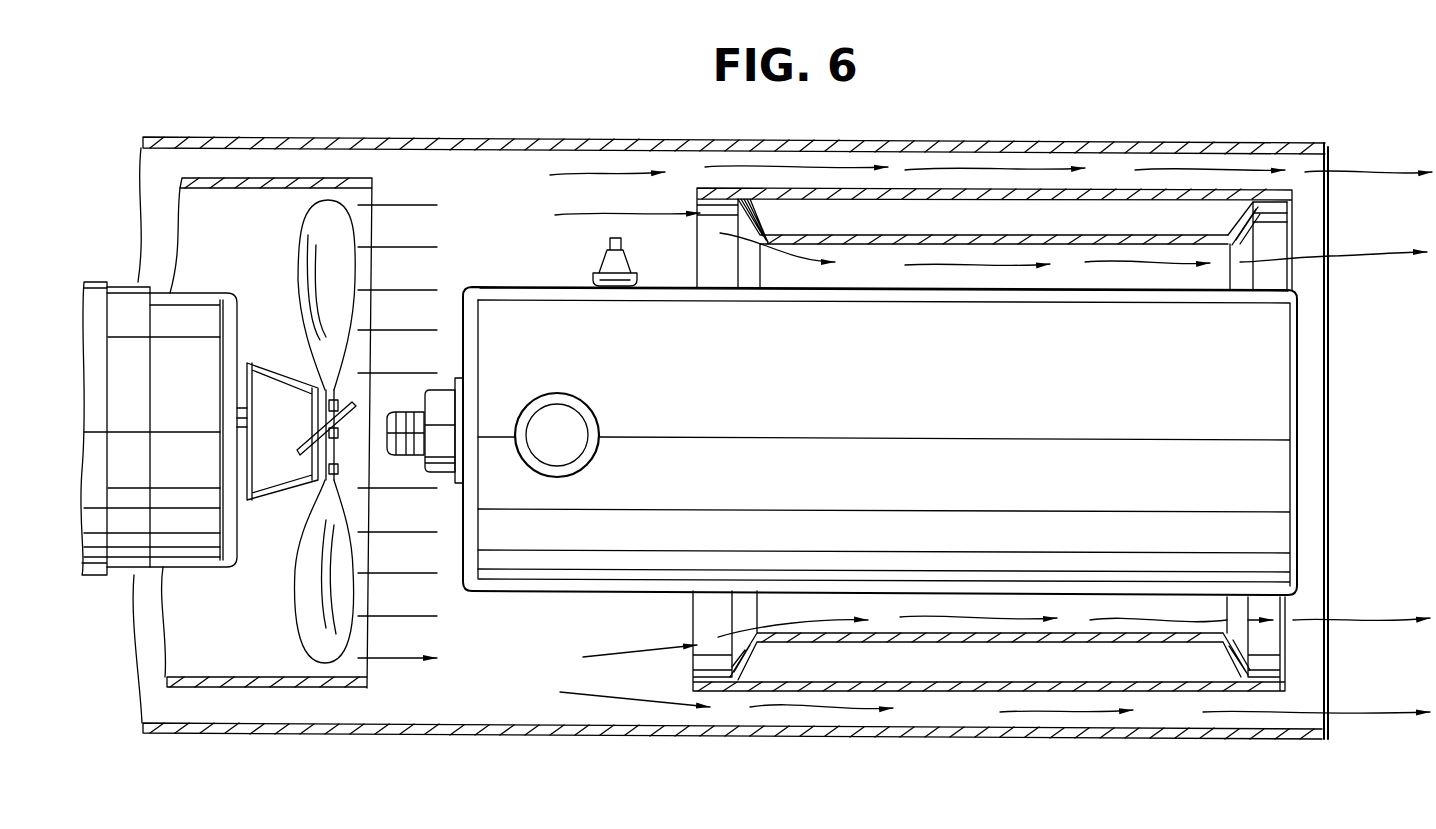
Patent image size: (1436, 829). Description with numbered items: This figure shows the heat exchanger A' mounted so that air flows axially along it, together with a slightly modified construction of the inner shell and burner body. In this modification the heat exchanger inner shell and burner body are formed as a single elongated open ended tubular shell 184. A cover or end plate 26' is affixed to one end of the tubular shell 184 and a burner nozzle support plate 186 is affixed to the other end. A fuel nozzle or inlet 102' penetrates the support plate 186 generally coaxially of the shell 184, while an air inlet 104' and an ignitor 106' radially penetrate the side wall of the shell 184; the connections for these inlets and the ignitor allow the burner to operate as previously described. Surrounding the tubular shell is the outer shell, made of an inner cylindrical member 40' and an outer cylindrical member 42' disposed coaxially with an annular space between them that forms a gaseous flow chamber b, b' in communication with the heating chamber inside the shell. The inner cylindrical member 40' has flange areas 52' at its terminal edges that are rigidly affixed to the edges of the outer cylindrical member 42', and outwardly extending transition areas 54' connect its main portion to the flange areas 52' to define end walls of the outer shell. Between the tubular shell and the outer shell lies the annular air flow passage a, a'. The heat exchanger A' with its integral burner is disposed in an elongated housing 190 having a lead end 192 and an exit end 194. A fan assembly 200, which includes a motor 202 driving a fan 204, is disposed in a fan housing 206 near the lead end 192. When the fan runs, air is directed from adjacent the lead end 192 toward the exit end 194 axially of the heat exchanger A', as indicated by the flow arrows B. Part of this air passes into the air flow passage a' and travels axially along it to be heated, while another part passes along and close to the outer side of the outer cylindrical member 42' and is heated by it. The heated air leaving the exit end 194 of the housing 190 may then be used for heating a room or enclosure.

The elongated housing 190 is at (212, 137).
The lead end 192 is at (131, 160).
The exit end 194 is at (1336, 162).
The fan housing 206 is at (256, 177).
The fan assembly 200 is at (272, 253).
The motor 202 is at (225, 293).
The fan 204 is at (312, 263).
The fuel nozzle or inlet 102' is at (417, 432).
The ignitor 106' is at (578, 261).
The burner nozzle support plate 186 is at (473, 347).
The elongated open ended tubular shell 184 is at (978, 289).
The air inlet 104' is at (557, 417).
The cover or end plate 26' is at (931, 441).
The outer cylindrical member 42' is at (994, 197).
The inner cylindrical member 40' is at (999, 244).
The flange areas 52' is at (1006, 641).
The transition areas 54' is at (1062, 635).
The heat exchanger A' is at (1323, 493).
The air flow direction B is at (536, 594).
The annular air flow passage a is at (1073, 254).
The gaseous flow chamber b is at (1007, 214).
The air flow passage a' is at (1074, 615).
The lower annular passage b' is at (882, 660).